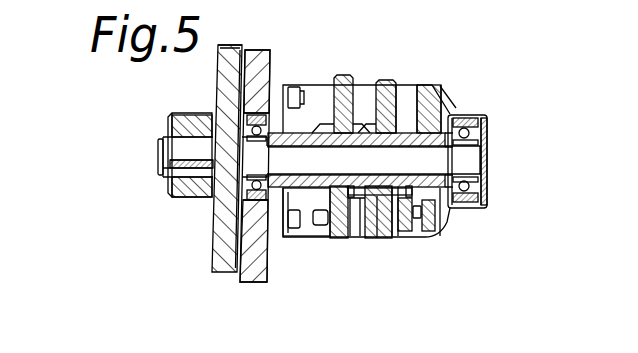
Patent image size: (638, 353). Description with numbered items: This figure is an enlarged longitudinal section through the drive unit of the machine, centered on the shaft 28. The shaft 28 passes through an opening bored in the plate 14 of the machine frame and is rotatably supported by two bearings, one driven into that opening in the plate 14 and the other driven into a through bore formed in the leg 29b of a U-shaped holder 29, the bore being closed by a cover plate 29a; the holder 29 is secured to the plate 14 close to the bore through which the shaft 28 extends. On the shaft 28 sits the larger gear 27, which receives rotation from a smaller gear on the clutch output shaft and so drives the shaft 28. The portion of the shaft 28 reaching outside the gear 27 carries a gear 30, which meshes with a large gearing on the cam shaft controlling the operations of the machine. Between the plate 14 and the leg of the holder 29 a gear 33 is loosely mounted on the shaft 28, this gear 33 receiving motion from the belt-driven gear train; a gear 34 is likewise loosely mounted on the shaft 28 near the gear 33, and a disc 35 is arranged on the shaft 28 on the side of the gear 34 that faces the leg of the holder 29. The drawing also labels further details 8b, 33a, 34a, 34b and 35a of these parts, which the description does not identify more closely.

The flange portion 8b is at (211, 3).
The plate 14 is at (262, 70).
The larger gear 27 is at (212, 251).
The shaft 28 is at (160, 157).
The U-shaped holder 29 is at (407, 93).
The cover plate 29a is at (484, 145).
The leg 29b is at (474, 115).
The gear 30 is at (172, 118).
The gear 33 is at (340, 78).
The lower tooth member 33a is at (333, 232).
The gear 34 is at (372, 238).
The intermediate member part 34a is at (382, 238).
The pin 34b is at (352, 238).
The disc 35 is at (430, 233).
The end member part 35a is at (402, 231).